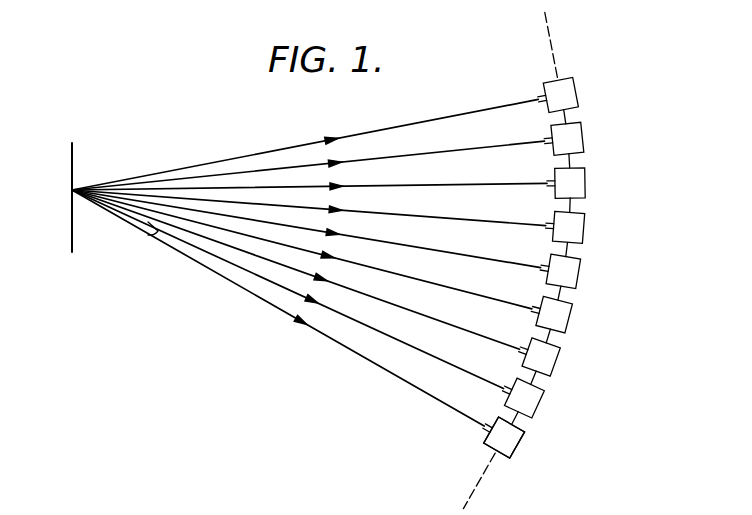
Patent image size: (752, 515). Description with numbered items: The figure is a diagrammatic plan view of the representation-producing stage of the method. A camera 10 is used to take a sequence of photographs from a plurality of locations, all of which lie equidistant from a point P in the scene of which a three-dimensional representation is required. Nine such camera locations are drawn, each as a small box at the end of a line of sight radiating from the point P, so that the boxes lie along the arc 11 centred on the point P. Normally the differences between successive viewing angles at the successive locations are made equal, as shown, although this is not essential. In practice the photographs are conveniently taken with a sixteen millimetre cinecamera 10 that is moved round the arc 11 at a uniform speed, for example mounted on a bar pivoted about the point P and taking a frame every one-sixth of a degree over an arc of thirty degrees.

The camera 10 is at (493, 444).
The arc 11 is at (478, 484).
The point P is at (62, 197).